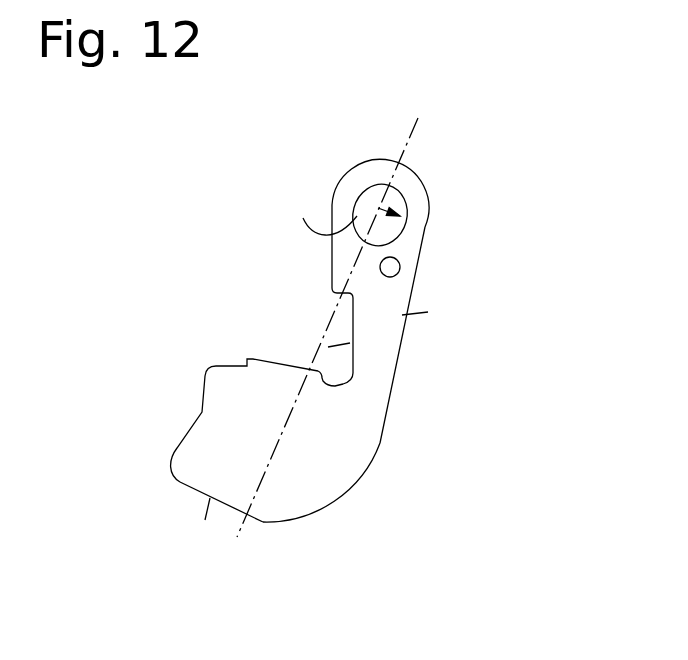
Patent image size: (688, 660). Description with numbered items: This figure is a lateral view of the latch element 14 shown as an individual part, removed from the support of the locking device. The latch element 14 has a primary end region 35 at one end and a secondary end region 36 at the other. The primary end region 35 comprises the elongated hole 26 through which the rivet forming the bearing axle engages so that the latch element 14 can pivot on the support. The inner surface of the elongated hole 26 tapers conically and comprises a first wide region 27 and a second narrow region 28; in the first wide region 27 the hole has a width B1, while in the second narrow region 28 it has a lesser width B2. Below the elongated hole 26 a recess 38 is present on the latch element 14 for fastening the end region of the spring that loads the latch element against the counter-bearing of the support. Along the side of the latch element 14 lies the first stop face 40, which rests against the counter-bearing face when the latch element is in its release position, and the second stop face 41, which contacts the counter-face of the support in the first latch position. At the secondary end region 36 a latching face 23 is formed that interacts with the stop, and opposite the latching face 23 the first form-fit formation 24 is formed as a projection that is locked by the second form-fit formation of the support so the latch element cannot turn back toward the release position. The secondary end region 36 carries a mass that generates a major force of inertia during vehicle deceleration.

The latch element 14 is at (358, 438).
The latching face 23 is at (207, 500).
The first form-fit formation 24 is at (268, 360).
The elongated hole 26 is at (397, 222).
The first wide region 27 is at (403, 195).
The second narrow region 28 is at (375, 237).
The primary end region 35 is at (410, 170).
The secondary end region 36 is at (291, 498).
The recess 38 is at (395, 270).
The first stop face 40 is at (403, 317).
The second stop face 41 is at (347, 337).
The width B1 is at (378, 208).
The width B2 is at (347, 210).